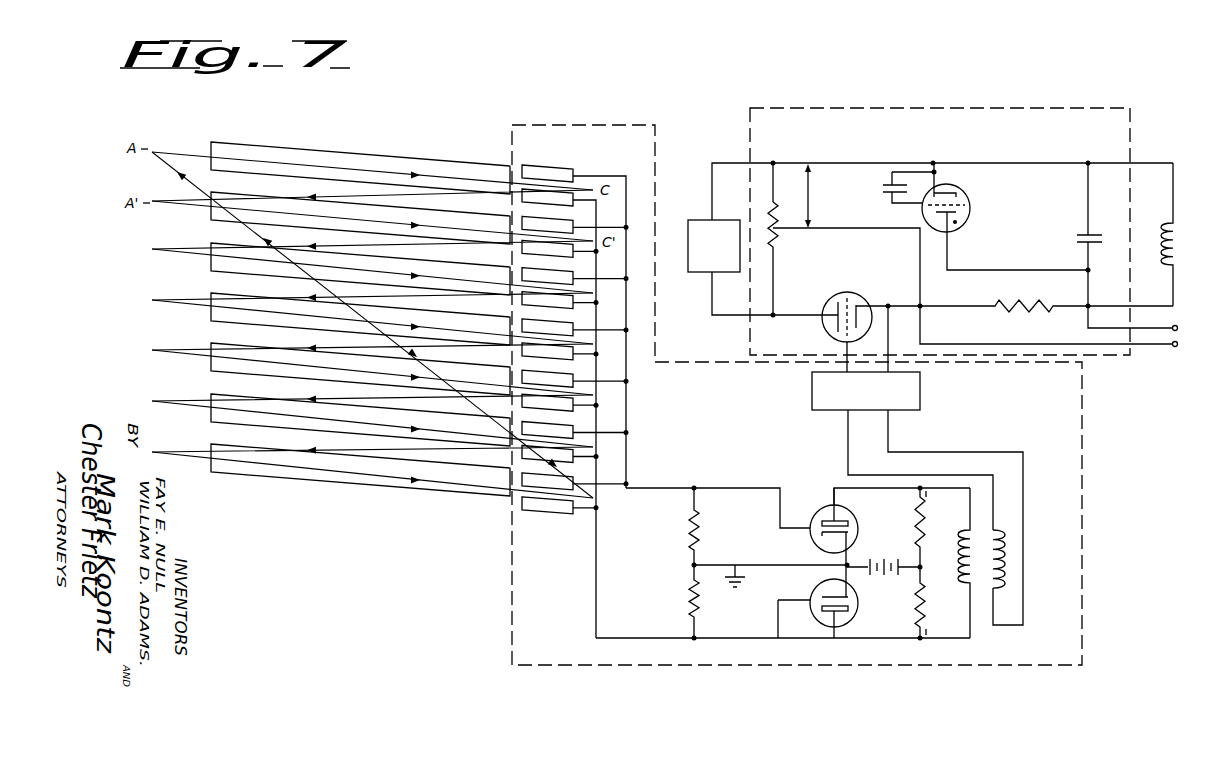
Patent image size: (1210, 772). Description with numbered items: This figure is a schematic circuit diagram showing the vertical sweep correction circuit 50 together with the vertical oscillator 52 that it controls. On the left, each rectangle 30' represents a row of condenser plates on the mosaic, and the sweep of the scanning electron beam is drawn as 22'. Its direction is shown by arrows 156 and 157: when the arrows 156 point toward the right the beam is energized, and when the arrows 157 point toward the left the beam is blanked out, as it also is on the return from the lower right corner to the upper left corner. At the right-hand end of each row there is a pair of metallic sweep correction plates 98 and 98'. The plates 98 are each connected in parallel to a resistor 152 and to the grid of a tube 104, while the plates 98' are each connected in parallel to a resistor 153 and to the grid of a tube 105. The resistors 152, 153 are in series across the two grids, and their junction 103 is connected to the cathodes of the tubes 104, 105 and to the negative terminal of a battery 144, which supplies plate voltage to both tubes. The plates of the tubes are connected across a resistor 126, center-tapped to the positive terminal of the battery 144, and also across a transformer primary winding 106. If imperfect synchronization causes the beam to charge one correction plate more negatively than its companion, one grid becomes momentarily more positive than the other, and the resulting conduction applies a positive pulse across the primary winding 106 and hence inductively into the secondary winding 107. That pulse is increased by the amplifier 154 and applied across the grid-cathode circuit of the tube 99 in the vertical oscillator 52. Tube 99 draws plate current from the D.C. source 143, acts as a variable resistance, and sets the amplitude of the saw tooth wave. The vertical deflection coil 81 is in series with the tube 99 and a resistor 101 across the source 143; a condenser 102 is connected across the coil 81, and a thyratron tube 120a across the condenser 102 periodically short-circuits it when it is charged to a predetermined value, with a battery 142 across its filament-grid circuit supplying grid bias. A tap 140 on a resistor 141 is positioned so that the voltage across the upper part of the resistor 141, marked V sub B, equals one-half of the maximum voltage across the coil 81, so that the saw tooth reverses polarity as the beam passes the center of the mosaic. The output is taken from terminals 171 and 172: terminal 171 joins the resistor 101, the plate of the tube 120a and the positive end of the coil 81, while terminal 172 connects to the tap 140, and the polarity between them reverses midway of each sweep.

The sweep of the electron beam 22' is at (372, 311).
The rectangle representing a row of condenser plates 30' is at (360, 310).
The arrows indicating energized beam direction 156 is at (420, 172).
The arrows indicating blanked beam direction 157 is at (304, 195).
The sweep correction plate 98 is at (575, 315).
The sweep correction plate 98' is at (555, 413).
The vertical sweep correction circuit 50 is at (1084, 632).
The vertical oscillator 52 is at (1103, 358).
The D.C. source 143 is at (694, 272).
The resistor 141 is at (780, 206).
The tap 140 is at (778, 232).
The battery 142 is at (876, 186).
The thyratron tube 120a is at (973, 197).
The condenser 102 is at (1072, 240).
The resistor 101 is at (1004, 306).
The vertical deflection coil 81 is at (1179, 262).
The output terminal 171 is at (1186, 323).
The output terminal 172 is at (1200, 360).
The variable resistance tube 99 is at (868, 302).
The amplifier 154 is at (921, 400).
The resistor 152 is at (702, 528).
The resistor 153 is at (698, 609).
The junction 103 is at (698, 563).
The tube 104 is at (844, 517).
The tube 105 is at (858, 598).
The battery 144 is at (895, 562).
The resistor 126 is at (918, 516).
The transformer primary winding 106 is at (962, 542).
The transformer secondary winding 107 is at (1004, 562).